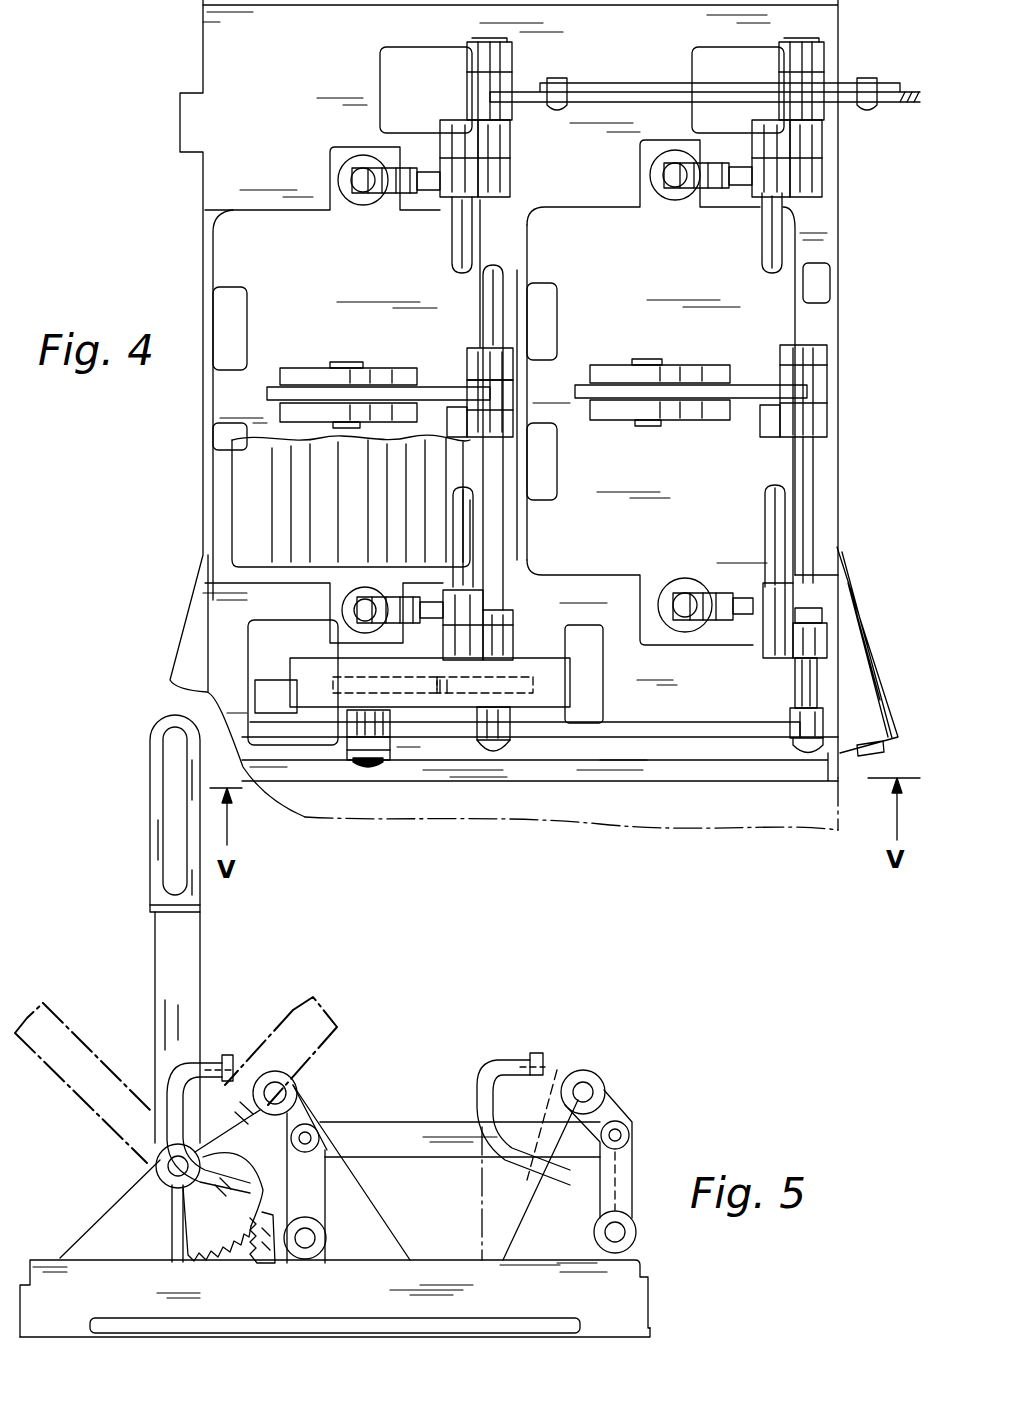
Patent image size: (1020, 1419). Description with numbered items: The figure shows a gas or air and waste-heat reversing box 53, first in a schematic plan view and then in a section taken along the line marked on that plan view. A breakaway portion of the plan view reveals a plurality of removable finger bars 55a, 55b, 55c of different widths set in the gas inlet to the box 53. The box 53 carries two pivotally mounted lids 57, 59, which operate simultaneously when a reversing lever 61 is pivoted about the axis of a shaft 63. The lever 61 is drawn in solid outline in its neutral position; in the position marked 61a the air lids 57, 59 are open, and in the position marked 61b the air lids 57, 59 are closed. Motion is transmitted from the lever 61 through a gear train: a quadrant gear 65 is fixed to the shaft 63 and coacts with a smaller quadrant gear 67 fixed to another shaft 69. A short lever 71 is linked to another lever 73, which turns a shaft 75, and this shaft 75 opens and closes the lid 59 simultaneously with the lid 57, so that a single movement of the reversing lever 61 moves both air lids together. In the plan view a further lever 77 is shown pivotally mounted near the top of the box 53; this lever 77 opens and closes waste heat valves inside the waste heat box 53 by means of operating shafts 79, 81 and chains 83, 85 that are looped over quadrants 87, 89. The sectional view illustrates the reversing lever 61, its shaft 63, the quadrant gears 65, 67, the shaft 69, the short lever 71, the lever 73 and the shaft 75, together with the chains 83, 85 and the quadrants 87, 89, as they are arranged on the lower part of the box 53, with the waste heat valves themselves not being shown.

In FIG. 4, the gas or air and waste-heat reversing box 53 is at (198, 462).
In FIG. 4, the removable finger bar 55a is at (243, 490).
In FIG. 4, the removable finger bar 55b is at (278, 517).
In FIG. 4, the removable finger bar 55c is at (300, 543).
In FIG. 4, the pivotally mounted lid 57 is at (232, 265).
In FIG. 4, the pivotally mounted lid 59 is at (578, 222).
In FIG. 4, the reversing lever 61 is at (362, 725).
In FIG. 5, the reversing lever 61 is at (157, 865).
In FIG. 5, the reversing lever open position 61a is at (68, 1024).
In FIG. 5, the reversing lever closed position 61b is at (297, 1003).
In FIG. 4, the shaft 63 is at (368, 762).
In FIG. 5, the shaft 63 is at (168, 1166).
In FIG. 4, the quadrant gear 65 is at (403, 690).
In FIG. 5, the quadrant gear 65 is at (197, 1258).
In FIG. 4, the smaller quadrant gear 67 is at (462, 690).
In FIG. 5, the smaller quadrant gear 67 is at (268, 1260).
In FIG. 4, the shaft 69 is at (498, 466).
In FIG. 5, the shaft 69 is at (315, 1256).
In FIG. 4, the short lever 71 is at (490, 723).
In FIG. 5, the short lever 71 is at (315, 1195).
In FIG. 4, the lever 73 is at (655, 725).
In FIG. 5, the lever 73 is at (403, 1125).
In FIG. 4, the shaft 75 is at (795, 683).
In FIG. 5, the shaft 75 is at (637, 1231).
In FIG. 4, the lever 77 is at (903, 85).
In FIG. 4, the operating shaft 79 is at (452, 252).
In FIG. 4, the operating shaft 81 is at (765, 250).
In FIG. 5, the chain 83 is at (172, 1212).
In FIG. 5, the chain 85 is at (480, 1178).
In FIG. 4, the quadrant 87 is at (388, 197).
In FIG. 5, the quadrant 87 is at (205, 1063).
In FIG. 4, the quadrant 89 is at (695, 195).
In FIG. 5, the quadrant 89 is at (503, 1062).